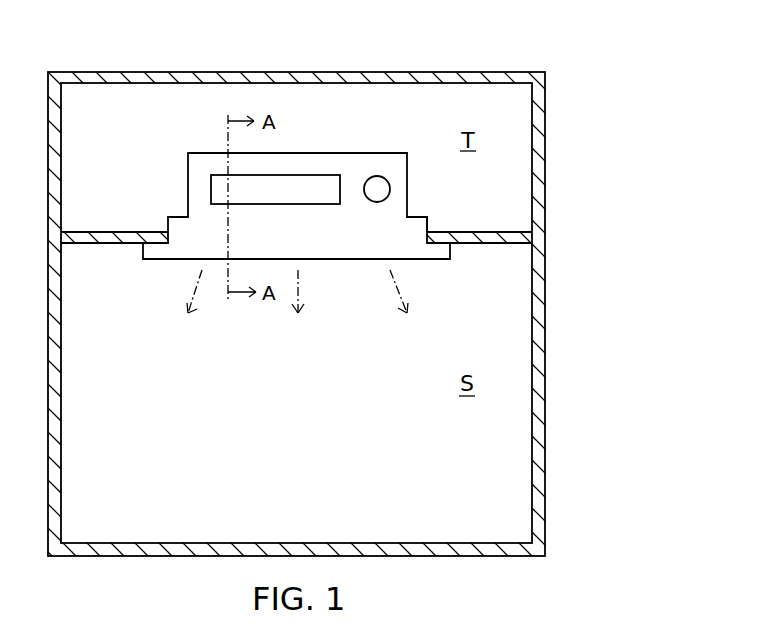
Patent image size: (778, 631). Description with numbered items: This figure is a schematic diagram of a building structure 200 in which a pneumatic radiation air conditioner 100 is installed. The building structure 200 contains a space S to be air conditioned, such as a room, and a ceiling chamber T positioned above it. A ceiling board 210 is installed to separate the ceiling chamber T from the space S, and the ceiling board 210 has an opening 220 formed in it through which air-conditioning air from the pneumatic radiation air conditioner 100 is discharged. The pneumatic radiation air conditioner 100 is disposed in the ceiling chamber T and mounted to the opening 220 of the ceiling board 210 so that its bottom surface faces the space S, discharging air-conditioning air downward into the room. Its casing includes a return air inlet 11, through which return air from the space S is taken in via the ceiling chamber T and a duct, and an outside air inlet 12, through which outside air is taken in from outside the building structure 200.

The pneumatic radiation air conditioner 100 is at (312, 144).
The return air inlet 11 is at (305, 204).
The outside air inlet 12 is at (377, 176).
The building structure 200 is at (568, 131).
The ceiling board 210 is at (510, 233).
The opening 220 is at (413, 232).